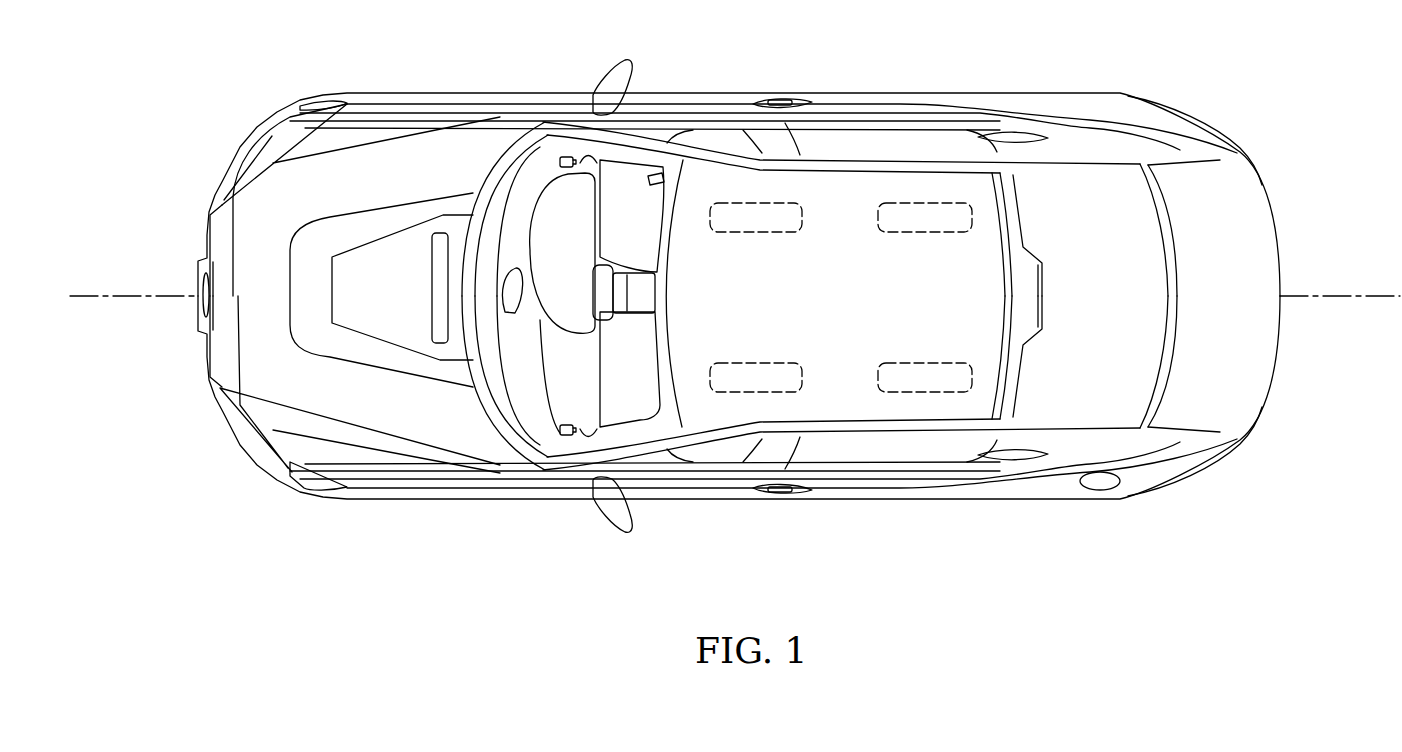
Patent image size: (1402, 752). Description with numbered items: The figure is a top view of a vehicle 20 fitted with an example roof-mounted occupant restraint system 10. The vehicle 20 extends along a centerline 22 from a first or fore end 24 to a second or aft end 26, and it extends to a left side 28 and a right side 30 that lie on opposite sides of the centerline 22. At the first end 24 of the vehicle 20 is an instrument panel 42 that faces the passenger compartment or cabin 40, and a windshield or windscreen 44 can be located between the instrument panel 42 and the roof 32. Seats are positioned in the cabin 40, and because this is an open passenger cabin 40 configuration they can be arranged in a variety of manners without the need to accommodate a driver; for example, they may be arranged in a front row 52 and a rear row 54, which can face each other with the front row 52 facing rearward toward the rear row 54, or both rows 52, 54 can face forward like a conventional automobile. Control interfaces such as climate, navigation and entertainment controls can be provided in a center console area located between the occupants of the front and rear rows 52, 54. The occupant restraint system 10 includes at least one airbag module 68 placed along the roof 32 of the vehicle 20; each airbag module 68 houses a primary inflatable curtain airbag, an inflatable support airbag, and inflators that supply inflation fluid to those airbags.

The occupant restraint system 10 is at (838, 392).
The vehicle 20 is at (1029, 60).
The centerline 22 is at (111, 298).
The first or fore end 24 is at (218, 90).
The second or aft end 26 is at (1268, 106).
The left side 28 is at (815, 520).
The right side 30 is at (814, 62).
The roof 32 is at (862, 306).
The passenger compartment or cabin 40 is at (1031, 227).
The instrument panel 42 is at (537, 178).
The windshield or windscreen 44 is at (560, 400).
The front row 52 is at (712, 476).
The rear row 54 is at (990, 470).
The airbag module 68 is at (757, 185).